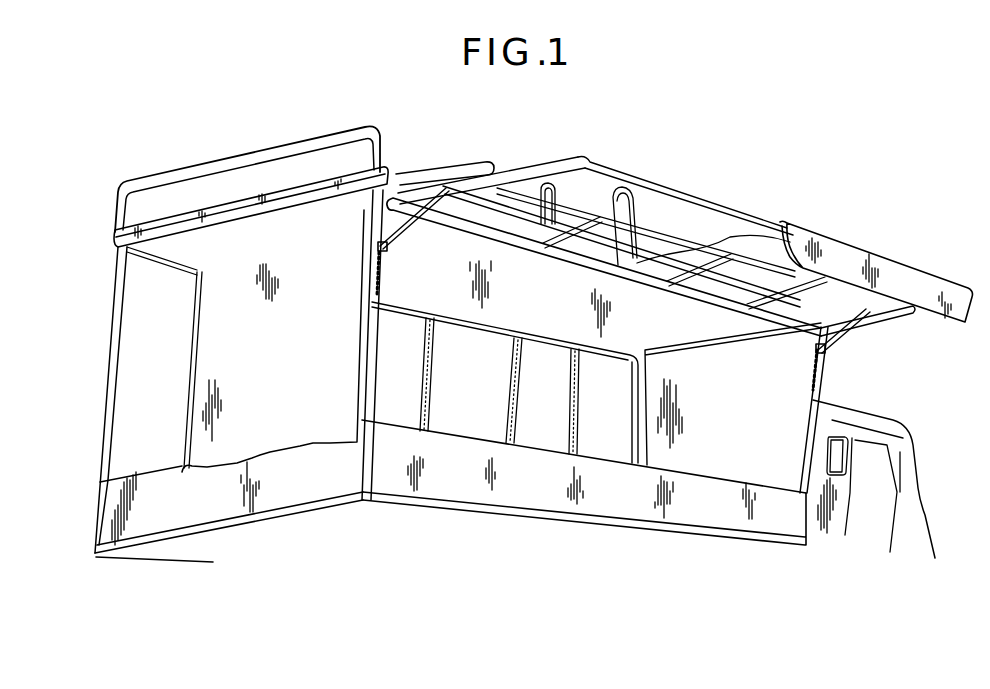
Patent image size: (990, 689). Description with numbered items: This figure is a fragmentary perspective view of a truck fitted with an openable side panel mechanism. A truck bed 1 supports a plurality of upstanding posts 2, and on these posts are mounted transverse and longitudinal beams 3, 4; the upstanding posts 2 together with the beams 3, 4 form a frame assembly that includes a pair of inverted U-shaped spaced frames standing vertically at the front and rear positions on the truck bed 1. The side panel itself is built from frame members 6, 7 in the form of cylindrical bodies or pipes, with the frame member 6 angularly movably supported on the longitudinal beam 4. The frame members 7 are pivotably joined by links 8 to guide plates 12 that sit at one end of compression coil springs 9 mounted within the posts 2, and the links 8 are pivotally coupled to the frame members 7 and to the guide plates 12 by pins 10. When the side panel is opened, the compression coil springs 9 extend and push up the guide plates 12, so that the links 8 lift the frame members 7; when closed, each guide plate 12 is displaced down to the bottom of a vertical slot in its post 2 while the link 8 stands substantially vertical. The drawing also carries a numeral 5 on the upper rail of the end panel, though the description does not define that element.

The truck bed 1 is at (566, 498).
The upstanding posts 2 is at (378, 398).
The transverse beams 3 is at (217, 212).
The longitudinal beams 4 is at (404, 172).
The top rail of head board 5 is at (314, 132).
The frame member 6 is at (574, 262).
The frame members 7 is at (547, 160).
The links 8 is at (420, 236).
The compression coil springs 9 is at (376, 282).
The pins 10 is at (380, 245).
The guide plates 12 is at (392, 250).